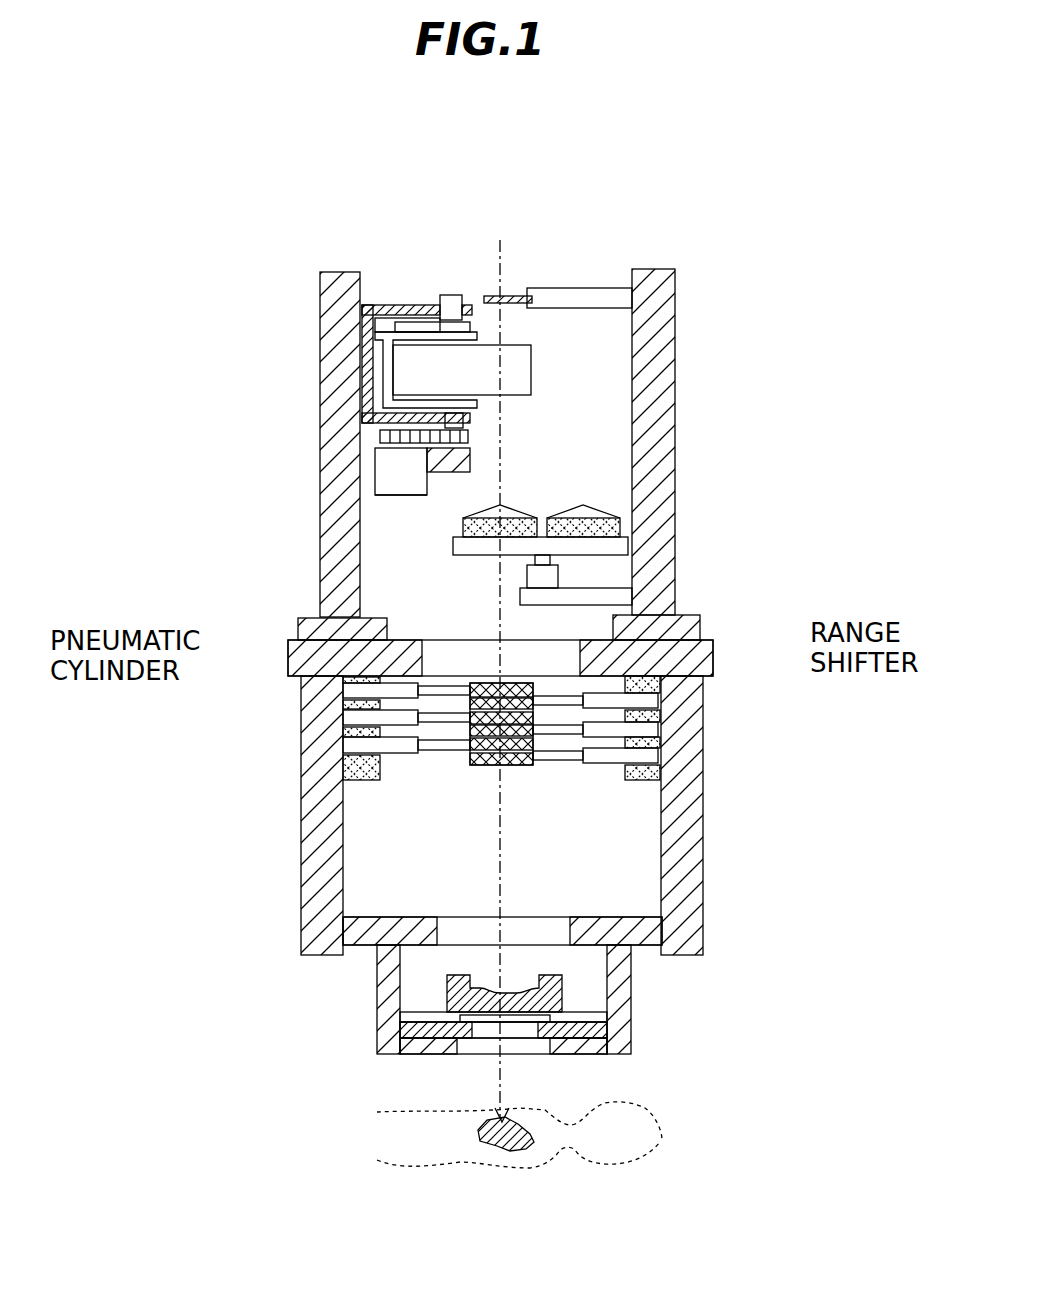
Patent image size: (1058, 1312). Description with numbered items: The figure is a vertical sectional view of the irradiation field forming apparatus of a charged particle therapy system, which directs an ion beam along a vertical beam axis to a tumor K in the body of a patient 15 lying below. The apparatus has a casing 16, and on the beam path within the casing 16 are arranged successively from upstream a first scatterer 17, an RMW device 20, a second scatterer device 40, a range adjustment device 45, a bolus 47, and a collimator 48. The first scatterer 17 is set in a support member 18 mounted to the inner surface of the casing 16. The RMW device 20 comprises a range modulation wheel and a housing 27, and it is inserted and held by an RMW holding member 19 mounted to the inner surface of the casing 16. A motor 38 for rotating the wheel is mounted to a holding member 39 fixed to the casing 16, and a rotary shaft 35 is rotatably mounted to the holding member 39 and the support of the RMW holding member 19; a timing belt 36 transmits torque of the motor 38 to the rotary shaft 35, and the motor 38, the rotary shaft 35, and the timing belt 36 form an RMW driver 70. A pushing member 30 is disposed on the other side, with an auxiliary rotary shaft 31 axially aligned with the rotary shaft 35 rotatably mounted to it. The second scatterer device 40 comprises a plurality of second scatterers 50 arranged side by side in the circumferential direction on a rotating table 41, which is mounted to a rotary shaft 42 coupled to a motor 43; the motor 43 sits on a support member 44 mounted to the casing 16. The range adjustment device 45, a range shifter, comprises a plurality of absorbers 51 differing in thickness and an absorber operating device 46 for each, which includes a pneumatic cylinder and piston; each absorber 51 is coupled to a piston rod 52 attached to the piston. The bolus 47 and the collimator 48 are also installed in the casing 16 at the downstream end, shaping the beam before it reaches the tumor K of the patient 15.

The patient 15 is at (662, 1140).
The casing 16 is at (330, 302).
The first scatterer 17 is at (510, 294).
The support member 18 is at (585, 286).
The RMW holding member 19 is at (390, 303).
The RMW device 20 is at (531, 368).
The housing 27 is at (480, 404).
The pushing member 30 is at (418, 316).
The auxiliary rotary shaft 31 is at (452, 293).
The rotary shaft 35 is at (470, 422).
The timing belt 36 is at (393, 434).
The motor 38 is at (380, 478).
The holding member 39 is at (440, 465).
The second scatterer device 40 is at (622, 522).
The rotating table 41 is at (625, 547).
The rotary shaft 42 is at (515, 562).
The motor 43 is at (558, 580).
The support member 44 is at (625, 598).
The range adjustment device 45 is at (475, 765).
The absorber operating device 46 is at (608, 760).
The bolus 47 is at (555, 990).
The collimator 48 is at (595, 1030).
The second scatterers 50 is at (595, 503).
The absorbers 51 is at (527, 765).
The piston rod 52 is at (432, 750).
The RMW driver 70 is at (382, 496).
The tumor K is at (520, 1128).